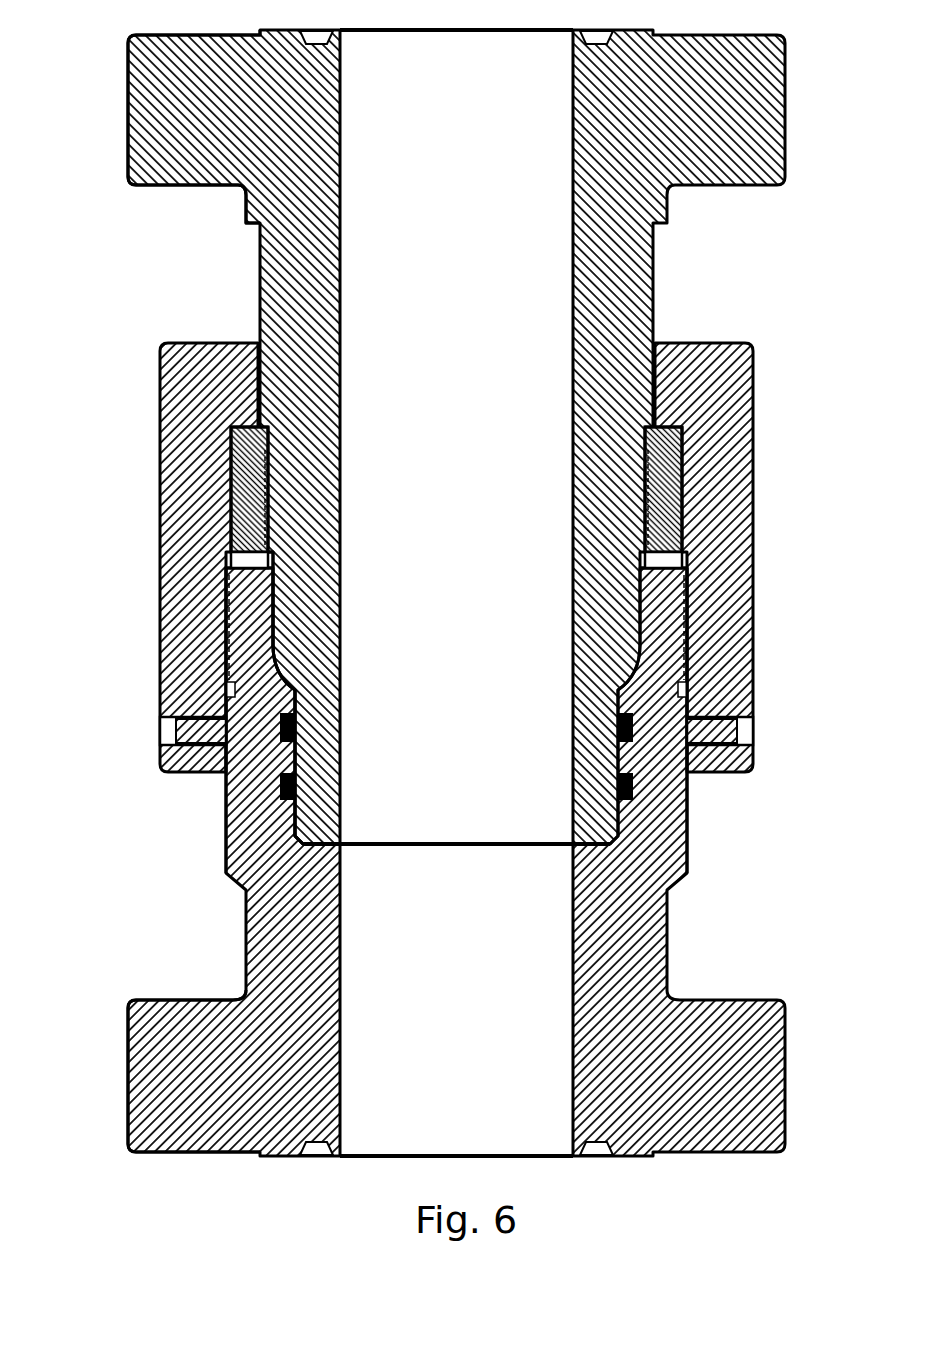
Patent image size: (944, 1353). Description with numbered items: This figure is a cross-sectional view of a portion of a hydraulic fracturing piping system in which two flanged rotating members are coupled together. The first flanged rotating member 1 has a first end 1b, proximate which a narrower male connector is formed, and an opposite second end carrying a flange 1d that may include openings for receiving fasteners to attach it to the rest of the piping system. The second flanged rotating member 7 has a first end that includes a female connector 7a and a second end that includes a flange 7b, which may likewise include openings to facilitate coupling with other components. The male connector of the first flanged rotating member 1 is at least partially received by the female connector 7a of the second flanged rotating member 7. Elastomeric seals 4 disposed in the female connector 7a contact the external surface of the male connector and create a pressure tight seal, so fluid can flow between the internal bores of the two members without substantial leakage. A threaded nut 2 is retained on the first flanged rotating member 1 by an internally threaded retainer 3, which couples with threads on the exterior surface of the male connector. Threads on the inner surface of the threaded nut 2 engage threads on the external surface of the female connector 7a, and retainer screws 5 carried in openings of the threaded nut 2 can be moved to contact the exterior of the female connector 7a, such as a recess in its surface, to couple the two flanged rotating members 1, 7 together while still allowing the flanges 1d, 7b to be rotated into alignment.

The flanged rotating member 1 is at (745, 100).
The flange 1d is at (178, 122).
The first end 1b is at (320, 796).
The threaded nut 2 is at (720, 386).
The threaded retainer 3 is at (660, 490).
The elastomeric seal 4 is at (640, 735).
The retainer screw 5 is at (200, 720).
The flanged rotating member 7 is at (755, 1058).
The female connector 7a is at (246, 618).
The flange 7b is at (155, 1090).